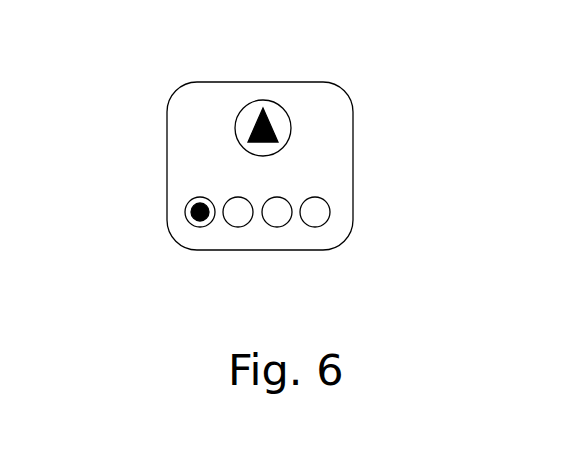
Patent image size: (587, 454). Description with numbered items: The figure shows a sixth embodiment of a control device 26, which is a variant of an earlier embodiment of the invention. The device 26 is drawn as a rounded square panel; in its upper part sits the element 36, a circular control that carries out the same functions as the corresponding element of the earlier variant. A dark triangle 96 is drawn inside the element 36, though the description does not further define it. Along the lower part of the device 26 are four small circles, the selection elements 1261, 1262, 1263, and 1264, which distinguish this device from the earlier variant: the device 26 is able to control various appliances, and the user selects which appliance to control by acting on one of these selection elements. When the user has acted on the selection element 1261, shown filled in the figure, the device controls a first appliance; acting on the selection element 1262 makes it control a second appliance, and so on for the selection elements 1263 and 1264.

The control device 26 is at (214, 79).
The element 36 is at (231, 121).
The indicator triangle 96 is at (239, 142).
The selection element 1261 is at (186, 228).
The selection element 1262 is at (240, 230).
The selection element 1263 is at (286, 226).
The selection element 1264 is at (333, 210).